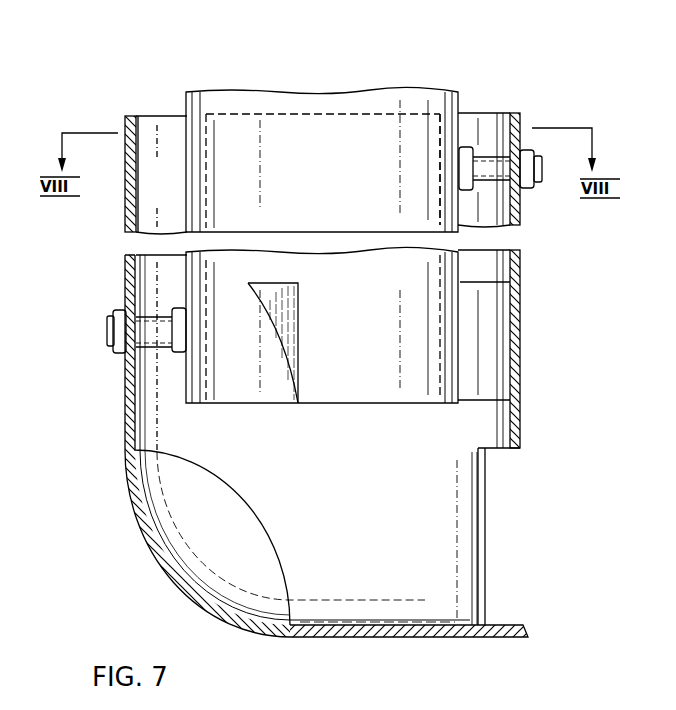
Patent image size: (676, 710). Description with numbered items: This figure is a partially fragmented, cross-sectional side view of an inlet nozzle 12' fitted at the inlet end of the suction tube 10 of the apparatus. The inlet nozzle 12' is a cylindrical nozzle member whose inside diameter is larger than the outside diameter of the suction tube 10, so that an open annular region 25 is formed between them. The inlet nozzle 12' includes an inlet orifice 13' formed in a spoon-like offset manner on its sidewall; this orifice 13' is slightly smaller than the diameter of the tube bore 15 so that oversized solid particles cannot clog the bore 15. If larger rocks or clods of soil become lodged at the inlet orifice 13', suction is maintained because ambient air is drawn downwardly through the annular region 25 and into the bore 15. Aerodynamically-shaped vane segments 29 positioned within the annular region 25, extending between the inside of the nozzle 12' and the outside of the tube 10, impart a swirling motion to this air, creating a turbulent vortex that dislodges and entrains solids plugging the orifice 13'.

The suction tube 10 is at (187, 104).
The tube bore 15 is at (441, 140).
The annular region 25 is at (181, 195).
The vane segments 29 is at (300, 328).
The inlet nozzle 12' is at (236, 446).
The inlet orifice 13' is at (423, 542).